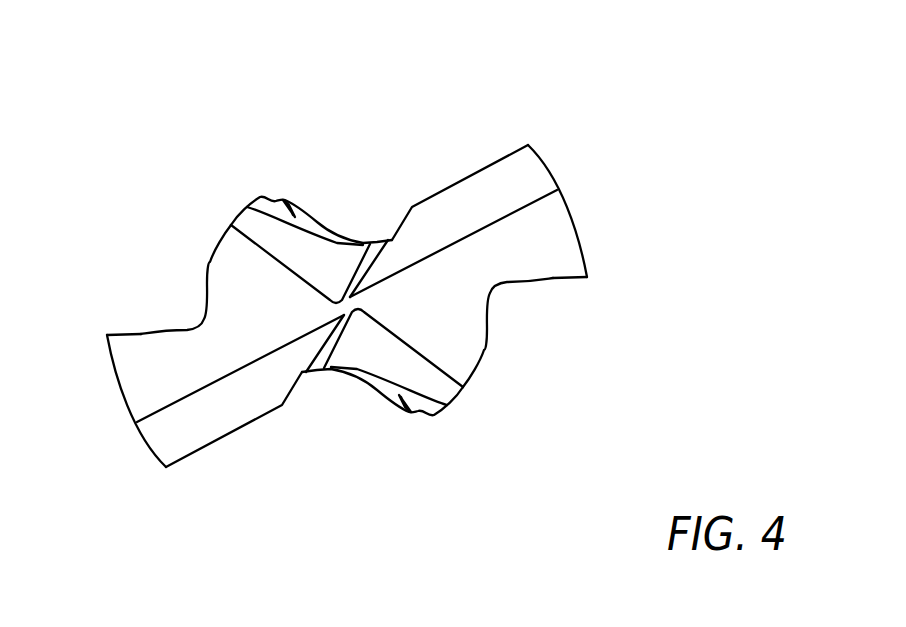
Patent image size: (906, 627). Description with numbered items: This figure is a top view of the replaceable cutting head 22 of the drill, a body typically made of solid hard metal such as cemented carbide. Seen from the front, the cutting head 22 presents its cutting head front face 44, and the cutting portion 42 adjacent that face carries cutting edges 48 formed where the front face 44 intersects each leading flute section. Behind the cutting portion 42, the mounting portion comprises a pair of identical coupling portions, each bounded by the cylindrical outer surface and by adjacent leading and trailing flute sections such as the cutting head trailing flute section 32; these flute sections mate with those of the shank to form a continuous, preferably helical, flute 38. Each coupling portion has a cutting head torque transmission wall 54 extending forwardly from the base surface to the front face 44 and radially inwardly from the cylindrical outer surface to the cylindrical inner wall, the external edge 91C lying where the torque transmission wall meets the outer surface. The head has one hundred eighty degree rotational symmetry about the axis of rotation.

The cutting head 22 is at (375, 104).
The cutting edges 48 is at (452, 182).
The cutting portion 42 is at (512, 185).
The cutting head front face 44 is at (146, 358).
The outer edge 91C is at (587, 277).
The cutting head torque transmission wall 54 is at (556, 279).
The cutting head and shank flute 38 is at (357, 392).
The cutting head trailing flute section 32 is at (387, 387).